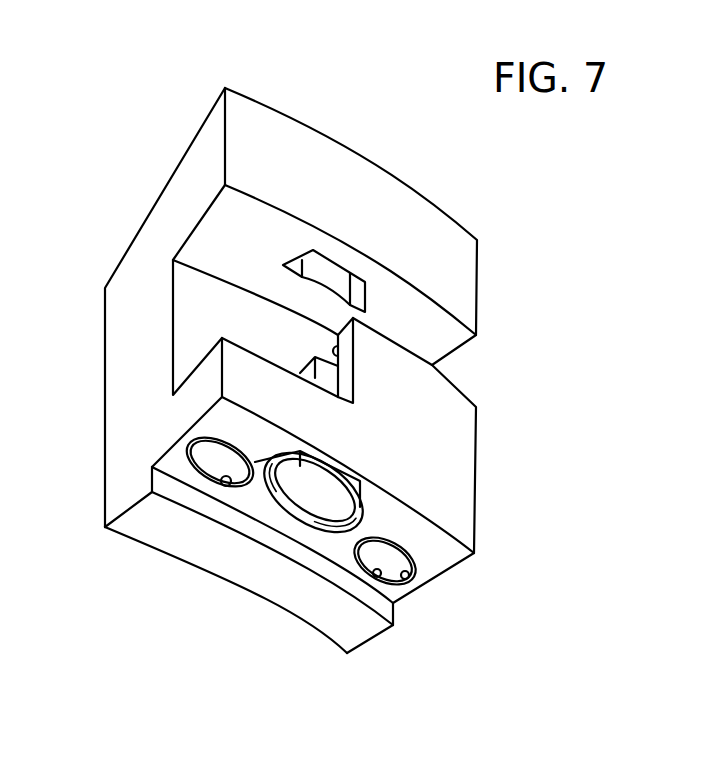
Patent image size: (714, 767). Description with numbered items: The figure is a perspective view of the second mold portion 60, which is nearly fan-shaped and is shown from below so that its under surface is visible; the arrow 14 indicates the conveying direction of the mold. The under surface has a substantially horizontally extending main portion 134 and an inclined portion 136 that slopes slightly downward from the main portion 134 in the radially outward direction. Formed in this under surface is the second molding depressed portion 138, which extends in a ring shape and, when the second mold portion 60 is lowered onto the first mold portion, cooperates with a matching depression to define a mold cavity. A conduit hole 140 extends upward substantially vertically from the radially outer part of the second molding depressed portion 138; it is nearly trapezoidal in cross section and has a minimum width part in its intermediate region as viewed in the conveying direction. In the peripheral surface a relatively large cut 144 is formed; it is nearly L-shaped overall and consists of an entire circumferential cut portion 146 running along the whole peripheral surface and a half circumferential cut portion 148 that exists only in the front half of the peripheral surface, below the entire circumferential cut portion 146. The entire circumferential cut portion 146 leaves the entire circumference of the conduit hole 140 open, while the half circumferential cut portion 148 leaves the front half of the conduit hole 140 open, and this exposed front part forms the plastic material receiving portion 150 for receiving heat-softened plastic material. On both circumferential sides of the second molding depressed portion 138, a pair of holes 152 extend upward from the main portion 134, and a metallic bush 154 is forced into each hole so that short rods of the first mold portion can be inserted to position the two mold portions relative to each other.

The conveying direction arrow 14 is at (208, 48).
The second mold portion 60 is at (501, 260).
The main portion 134 is at (332, 540).
The inclined portion 136 is at (428, 535).
The second molding depressed portion 138 is at (277, 497).
The conduit hole 140 is at (328, 468).
The cut 144 is at (201, 253).
The entire circumferential cut portion 146 is at (450, 337).
The half circumferential cut portion 148 is at (196, 373).
The plastic material receiving portion 150 is at (340, 360).
The holes 152 is at (198, 470).
The metallic bush 154 is at (214, 484).